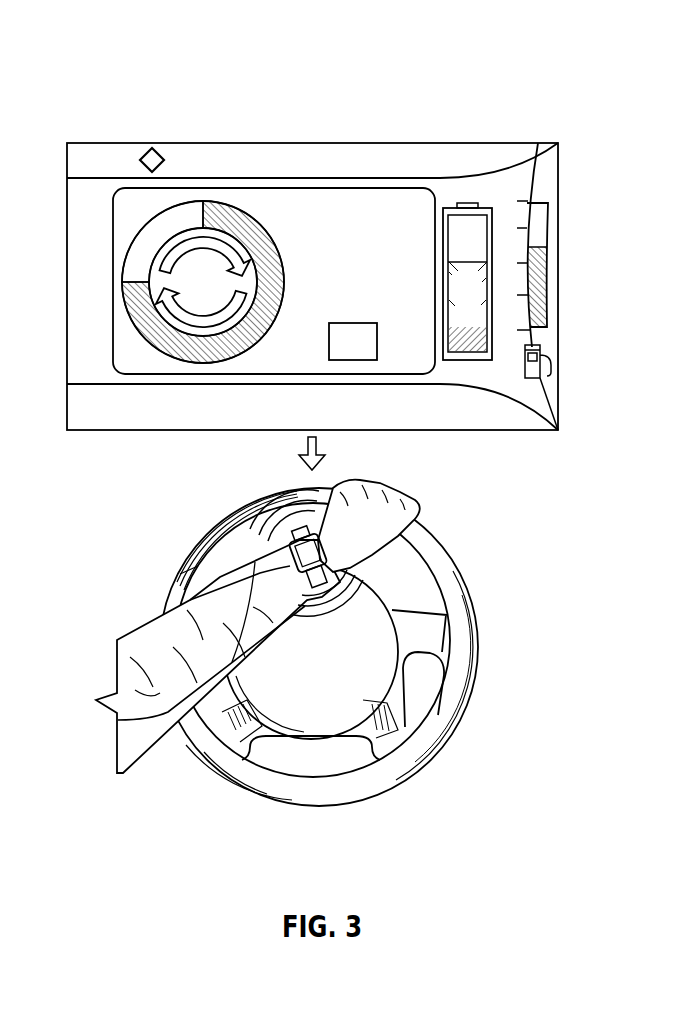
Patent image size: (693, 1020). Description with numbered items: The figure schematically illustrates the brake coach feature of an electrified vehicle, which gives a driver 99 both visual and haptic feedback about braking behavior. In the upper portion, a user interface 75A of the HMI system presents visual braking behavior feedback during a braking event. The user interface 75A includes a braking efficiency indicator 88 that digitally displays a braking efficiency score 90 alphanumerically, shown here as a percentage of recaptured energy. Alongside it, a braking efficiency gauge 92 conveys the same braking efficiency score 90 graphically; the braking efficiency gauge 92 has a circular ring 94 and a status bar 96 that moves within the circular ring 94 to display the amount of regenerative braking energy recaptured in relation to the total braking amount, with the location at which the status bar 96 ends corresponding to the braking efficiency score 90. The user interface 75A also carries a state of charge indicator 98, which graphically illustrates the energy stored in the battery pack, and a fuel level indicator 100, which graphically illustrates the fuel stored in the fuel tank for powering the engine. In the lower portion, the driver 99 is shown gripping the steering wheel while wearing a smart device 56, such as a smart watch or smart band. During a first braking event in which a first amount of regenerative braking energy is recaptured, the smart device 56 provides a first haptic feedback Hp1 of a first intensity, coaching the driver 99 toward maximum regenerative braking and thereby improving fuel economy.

The user interface 75A is at (141, 136).
The circular ring 94 is at (165, 226).
The braking efficiency gauge 92 is at (150, 236).
The status bar 96 is at (127, 290).
The braking efficiency score 90 is at (338, 222).
The braking efficiency indicator 88 is at (365, 225).
The state of charge indicator 98 is at (466, 229).
The fuel level indicator 100 is at (542, 222).
The first haptic feedback Hp1 is at (267, 508).
The smart device 56 is at (334, 545).
The driver 99 is at (148, 742).